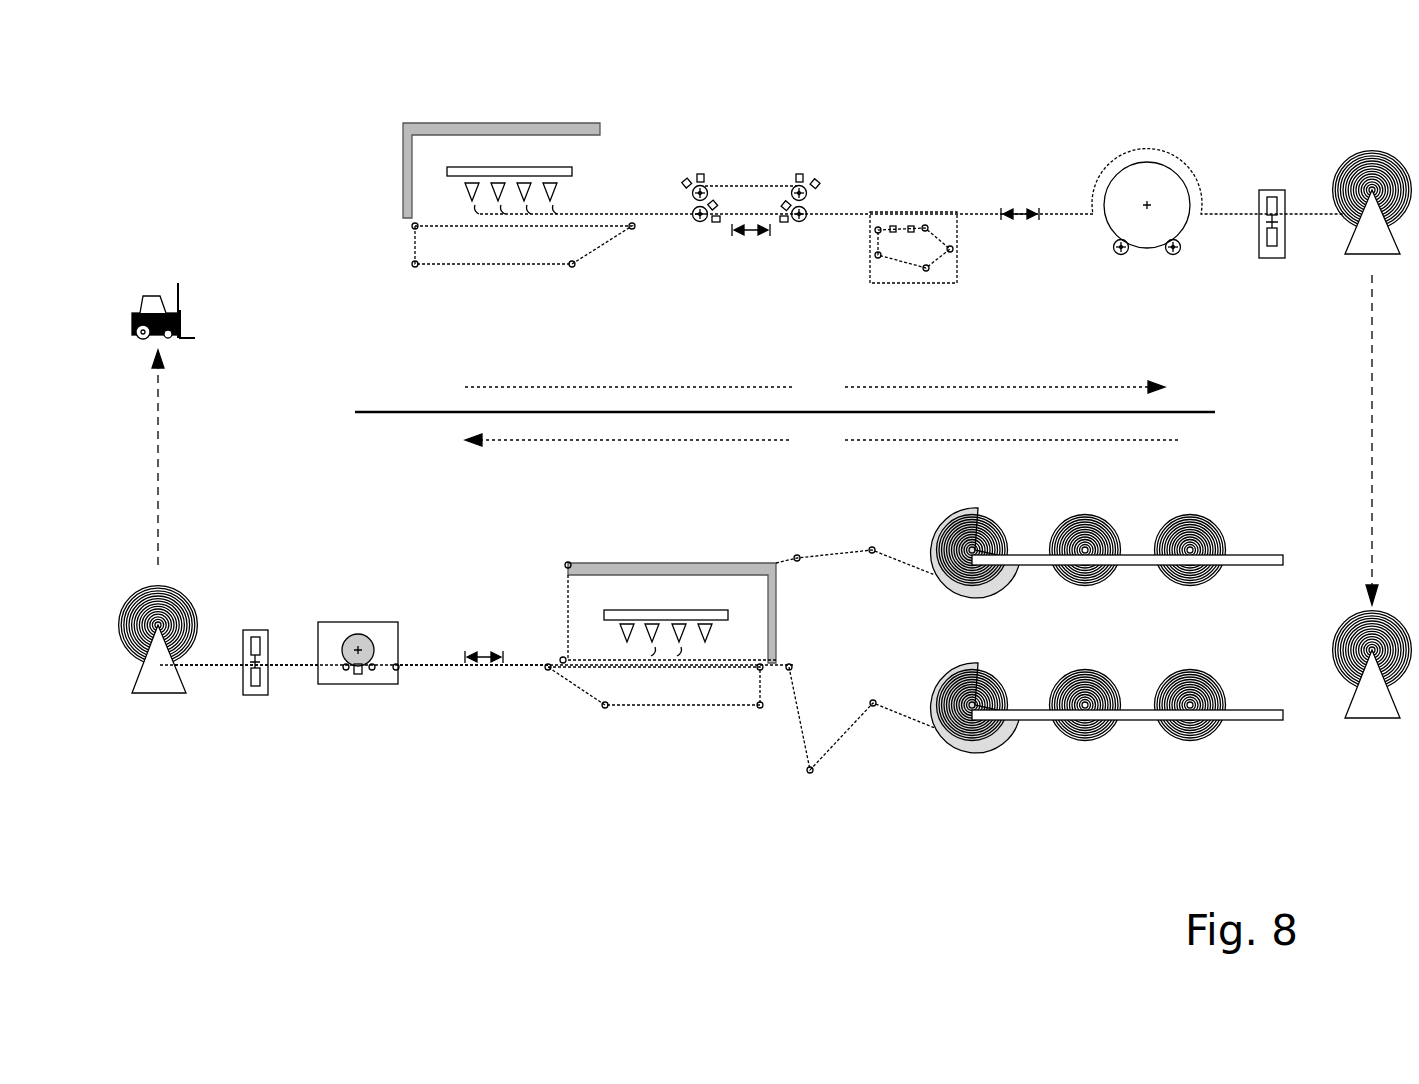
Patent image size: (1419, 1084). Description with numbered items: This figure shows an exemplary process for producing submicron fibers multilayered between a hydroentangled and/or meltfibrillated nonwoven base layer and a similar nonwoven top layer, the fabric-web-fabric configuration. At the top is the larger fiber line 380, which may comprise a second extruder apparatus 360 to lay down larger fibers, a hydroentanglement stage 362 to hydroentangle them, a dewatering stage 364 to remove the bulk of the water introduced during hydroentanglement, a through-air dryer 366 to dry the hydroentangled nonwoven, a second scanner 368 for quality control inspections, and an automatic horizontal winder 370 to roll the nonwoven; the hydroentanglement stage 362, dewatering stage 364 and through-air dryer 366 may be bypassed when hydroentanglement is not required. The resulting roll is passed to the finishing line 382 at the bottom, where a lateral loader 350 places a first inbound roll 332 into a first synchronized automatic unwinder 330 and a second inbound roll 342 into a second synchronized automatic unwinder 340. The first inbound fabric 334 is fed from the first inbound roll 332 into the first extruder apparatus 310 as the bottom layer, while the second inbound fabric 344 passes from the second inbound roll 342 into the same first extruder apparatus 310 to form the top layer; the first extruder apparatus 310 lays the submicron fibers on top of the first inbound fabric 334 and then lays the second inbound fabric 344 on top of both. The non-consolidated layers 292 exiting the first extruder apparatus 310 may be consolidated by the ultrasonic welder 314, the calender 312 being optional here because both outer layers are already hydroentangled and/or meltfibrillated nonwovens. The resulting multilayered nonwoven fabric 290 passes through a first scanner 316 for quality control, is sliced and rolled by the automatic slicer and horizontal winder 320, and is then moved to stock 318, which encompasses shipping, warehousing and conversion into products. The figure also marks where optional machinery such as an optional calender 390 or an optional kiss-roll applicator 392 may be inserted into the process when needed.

The resulting multilayered nonwoven fabric 290 is at (294, 663).
The non-consolidated layers 292 is at (526, 663).
The first extruder apparatus 310 is at (770, 523).
The calender 312 is at (500, 690).
The ultrasonic welder 314 is at (386, 686).
The first scanner 316 is at (265, 697).
The stock 318 is at (183, 347).
The automatic slicer and horizontal winder 320 is at (126, 592).
The first synchronized automatic unwinder 330 is at (1290, 752).
The first inbound roll 332 is at (1003, 688).
The first inbound fabric 334 is at (820, 712).
The second synchronized automatic unwinder 340 is at (1290, 598).
The second inbound roll 342 is at (998, 528).
The second inbound fabric 344 is at (838, 552).
The lateral loader 350 is at (1352, 618).
The second extruder apparatus 360 is at (625, 96).
The hydroentanglement stage 362 is at (820, 96).
The dewatering stage 364 is at (955, 96).
The through-air dryer 366 is at (1205, 96).
The second scanner 368 is at (1270, 190).
The automatic horizontal winder 370 is at (1410, 96).
The larger fiber line 380 is at (815, 388).
The finishing line 382 is at (822, 441).
The optional calender 390 is at (736, 248).
The optional kiss-roll applicator 392 is at (1021, 200).